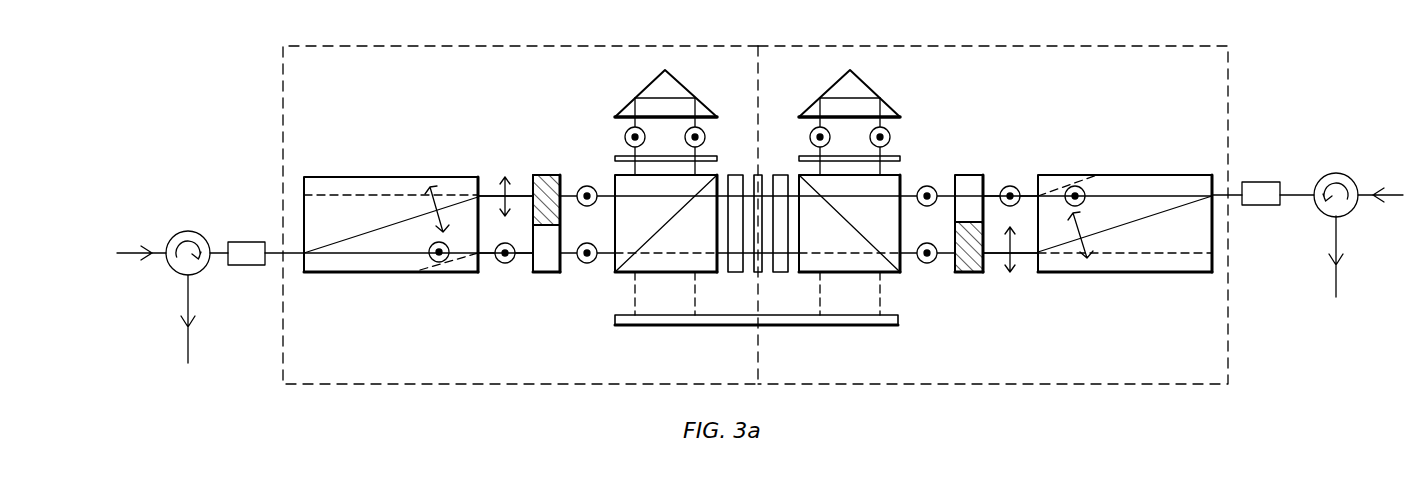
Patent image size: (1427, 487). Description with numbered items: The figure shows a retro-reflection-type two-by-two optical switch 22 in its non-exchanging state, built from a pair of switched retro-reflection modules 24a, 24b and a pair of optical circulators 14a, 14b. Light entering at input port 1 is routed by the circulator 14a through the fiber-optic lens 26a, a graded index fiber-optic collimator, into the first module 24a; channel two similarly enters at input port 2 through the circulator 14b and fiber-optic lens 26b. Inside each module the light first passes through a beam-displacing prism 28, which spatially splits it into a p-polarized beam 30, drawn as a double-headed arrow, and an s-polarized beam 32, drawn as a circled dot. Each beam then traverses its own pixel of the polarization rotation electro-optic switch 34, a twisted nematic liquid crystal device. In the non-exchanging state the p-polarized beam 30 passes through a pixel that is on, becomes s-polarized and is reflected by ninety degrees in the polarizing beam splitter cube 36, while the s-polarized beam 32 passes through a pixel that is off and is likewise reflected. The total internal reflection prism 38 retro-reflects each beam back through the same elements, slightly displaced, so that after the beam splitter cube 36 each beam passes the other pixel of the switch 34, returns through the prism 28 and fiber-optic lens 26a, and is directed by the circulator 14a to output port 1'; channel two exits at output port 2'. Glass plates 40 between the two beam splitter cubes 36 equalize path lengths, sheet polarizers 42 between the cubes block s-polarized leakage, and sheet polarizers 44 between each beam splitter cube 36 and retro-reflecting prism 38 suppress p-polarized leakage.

The input port 1 is at (126, 254).
The output port 1' is at (190, 332).
The input port 2 is at (1398, 195).
The output port 2' is at (1337, 273).
The optical circulator 14a is at (188, 231).
The optical circulator 14b is at (1335, 172).
The 2x2 optical switch 22 is at (198, 107).
The switched retro-reflection module 24a is at (281, 63).
The switched retro-reflection module 24b is at (1230, 58).
The FO lens 26a is at (247, 242).
The FO lens 26b is at (1262, 182).
The beam-displacing prism 28 is at (390, 273).
The p-polarized beam 30 is at (527, 193).
The s-polarized beam 32 is at (527, 253).
The polarization rotation electro-optic switch 34 is at (545, 173).
The PBS cube 36 is at (622, 272).
The total internal reflection prism 38 is at (647, 90).
The glass plate 40 is at (735, 272).
The sheet polarizer 42 is at (782, 138).
The sheet polarizer 44 is at (617, 150).